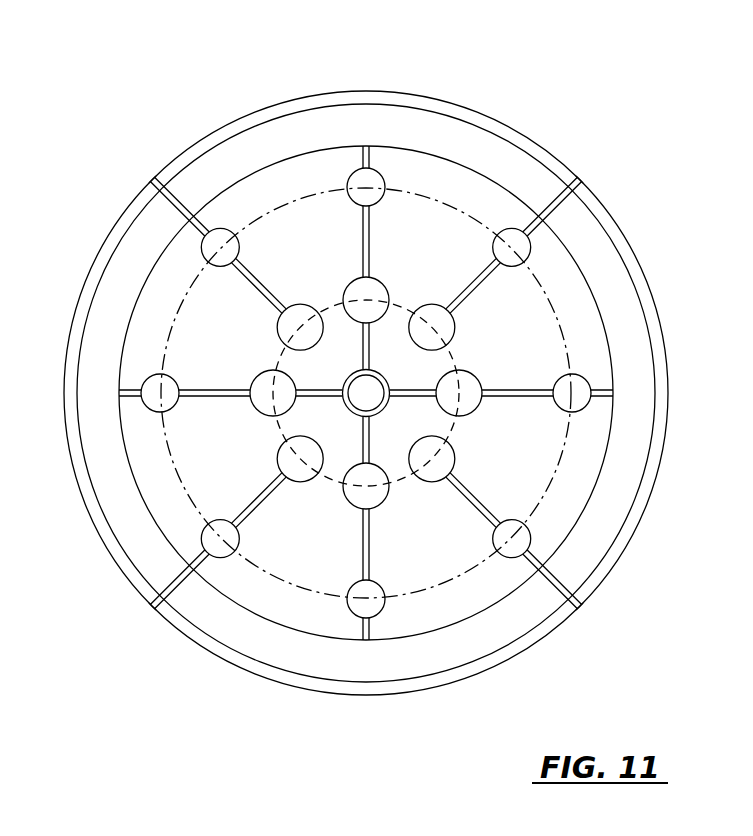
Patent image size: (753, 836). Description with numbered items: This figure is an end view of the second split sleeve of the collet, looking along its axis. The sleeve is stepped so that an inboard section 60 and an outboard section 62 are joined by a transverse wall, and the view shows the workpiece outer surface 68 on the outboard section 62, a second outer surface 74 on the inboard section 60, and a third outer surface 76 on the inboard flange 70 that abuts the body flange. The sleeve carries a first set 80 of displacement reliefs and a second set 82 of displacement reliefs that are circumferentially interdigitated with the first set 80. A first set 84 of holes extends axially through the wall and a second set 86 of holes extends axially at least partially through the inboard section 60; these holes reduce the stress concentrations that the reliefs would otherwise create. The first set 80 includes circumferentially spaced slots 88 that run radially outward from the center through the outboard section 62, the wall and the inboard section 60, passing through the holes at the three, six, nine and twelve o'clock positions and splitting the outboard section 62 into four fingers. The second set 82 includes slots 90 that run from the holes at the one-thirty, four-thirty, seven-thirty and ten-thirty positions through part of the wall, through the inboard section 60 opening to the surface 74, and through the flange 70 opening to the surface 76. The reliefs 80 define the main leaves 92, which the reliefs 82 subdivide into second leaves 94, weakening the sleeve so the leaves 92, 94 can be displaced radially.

The inboard section 60 is at (366, 317).
The outboard section 62 is at (535, 364).
The workpiece outer surface 68 is at (529, 343).
The inboard flange 70 is at (366, 445).
The second outer surface 74 is at (366, 353).
The third outer surface 76 is at (366, 344).
The first set of displacement reliefs 80 is at (382, 408).
The second set of displacement reliefs 82 is at (365, 451).
The first set of holes 84 is at (365, 395).
The second set of holes 86 is at (354, 402).
The first plurality of circumferentially spaced slots 88 is at (369, 397).
The second plurality of circumferentially spaced slots 90 is at (419, 396).
The first set of bearing sections or leaves 92 is at (405, 438).
The second set of bearing sections or leaves 94 is at (493, 472).